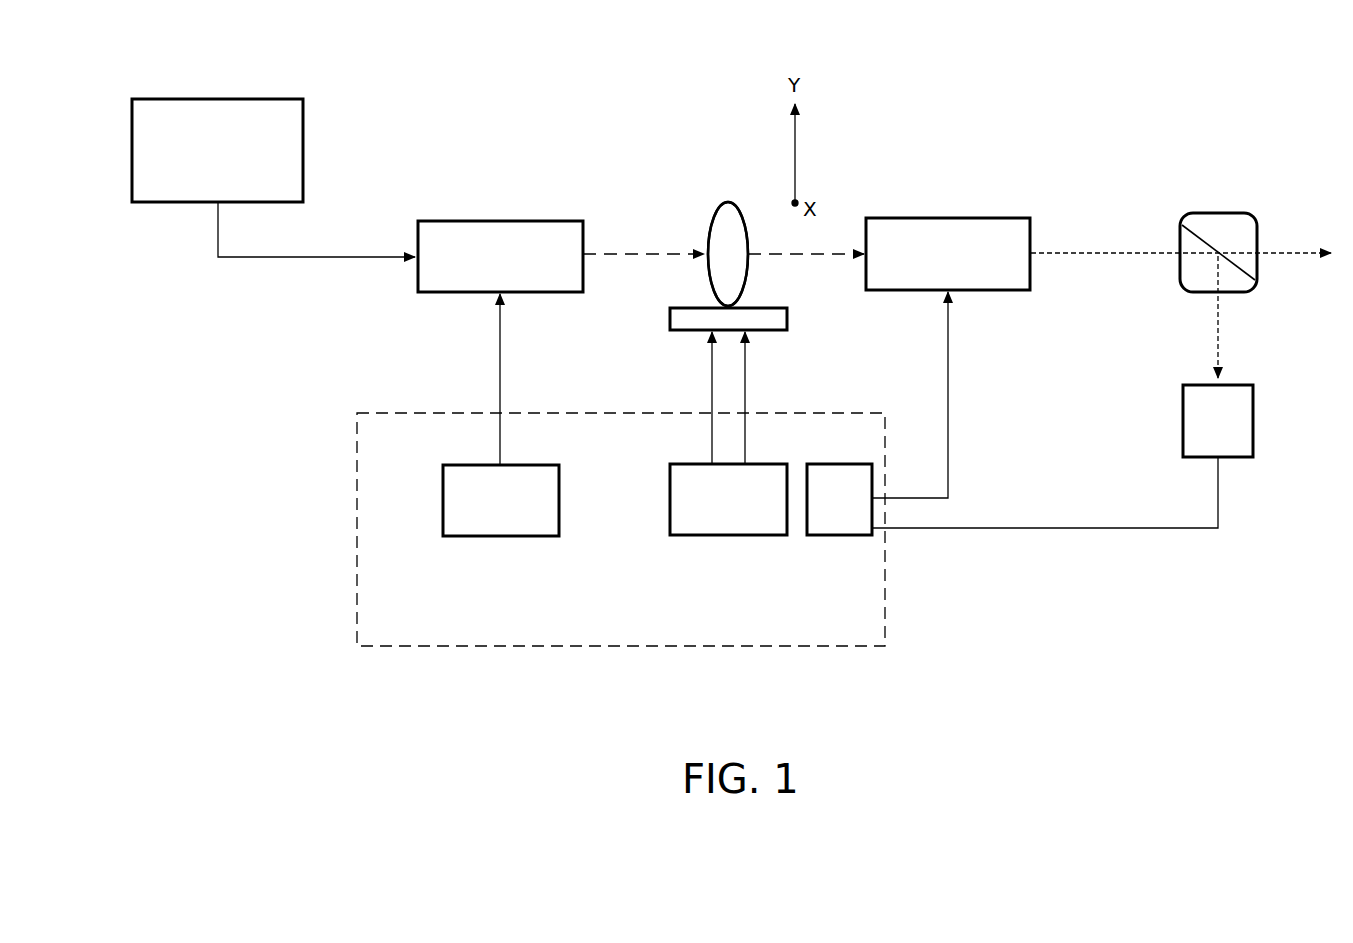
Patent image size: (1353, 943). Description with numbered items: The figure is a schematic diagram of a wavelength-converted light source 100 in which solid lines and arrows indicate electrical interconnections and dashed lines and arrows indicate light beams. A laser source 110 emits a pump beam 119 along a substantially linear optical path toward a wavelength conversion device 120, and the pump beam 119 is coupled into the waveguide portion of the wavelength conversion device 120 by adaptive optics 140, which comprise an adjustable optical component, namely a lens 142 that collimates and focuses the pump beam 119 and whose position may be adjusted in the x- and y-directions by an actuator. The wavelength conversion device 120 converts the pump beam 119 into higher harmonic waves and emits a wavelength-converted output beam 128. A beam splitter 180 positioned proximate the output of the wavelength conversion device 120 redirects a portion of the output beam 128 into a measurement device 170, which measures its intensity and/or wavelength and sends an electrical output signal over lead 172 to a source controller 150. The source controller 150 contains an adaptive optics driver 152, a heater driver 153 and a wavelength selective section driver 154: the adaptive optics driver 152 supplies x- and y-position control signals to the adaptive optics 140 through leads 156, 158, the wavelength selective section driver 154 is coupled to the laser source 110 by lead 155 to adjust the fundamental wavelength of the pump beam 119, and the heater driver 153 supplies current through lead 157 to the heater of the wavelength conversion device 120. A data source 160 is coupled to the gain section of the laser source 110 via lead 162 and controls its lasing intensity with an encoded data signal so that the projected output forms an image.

The wavelength-converted light source 100 is at (927, 66).
The laser source 110 is at (501, 220).
The pump beam 119 is at (640, 254).
The wavelength conversion device 120 is at (946, 217).
The wavelength-converted output beam 128 is at (1112, 251).
The adaptive optics 140 is at (760, 201).
The lens 142 is at (708, 278).
The source controller 150 is at (618, 648).
The adaptive optics driver 152 is at (730, 536).
The heater driver 153 is at (835, 536).
The wavelength selective section driver 154 is at (500, 537).
The lead 155 is at (500, 355).
The lead 156 is at (712, 368).
The lead 157 is at (948, 368).
The lead 158 is at (745, 380).
The data source 160 is at (213, 97).
The lead 162 is at (312, 258).
The measurement device 170 is at (1182, 418).
The lead 172 is at (1047, 526).
The beam splitter 180 is at (1218, 212).